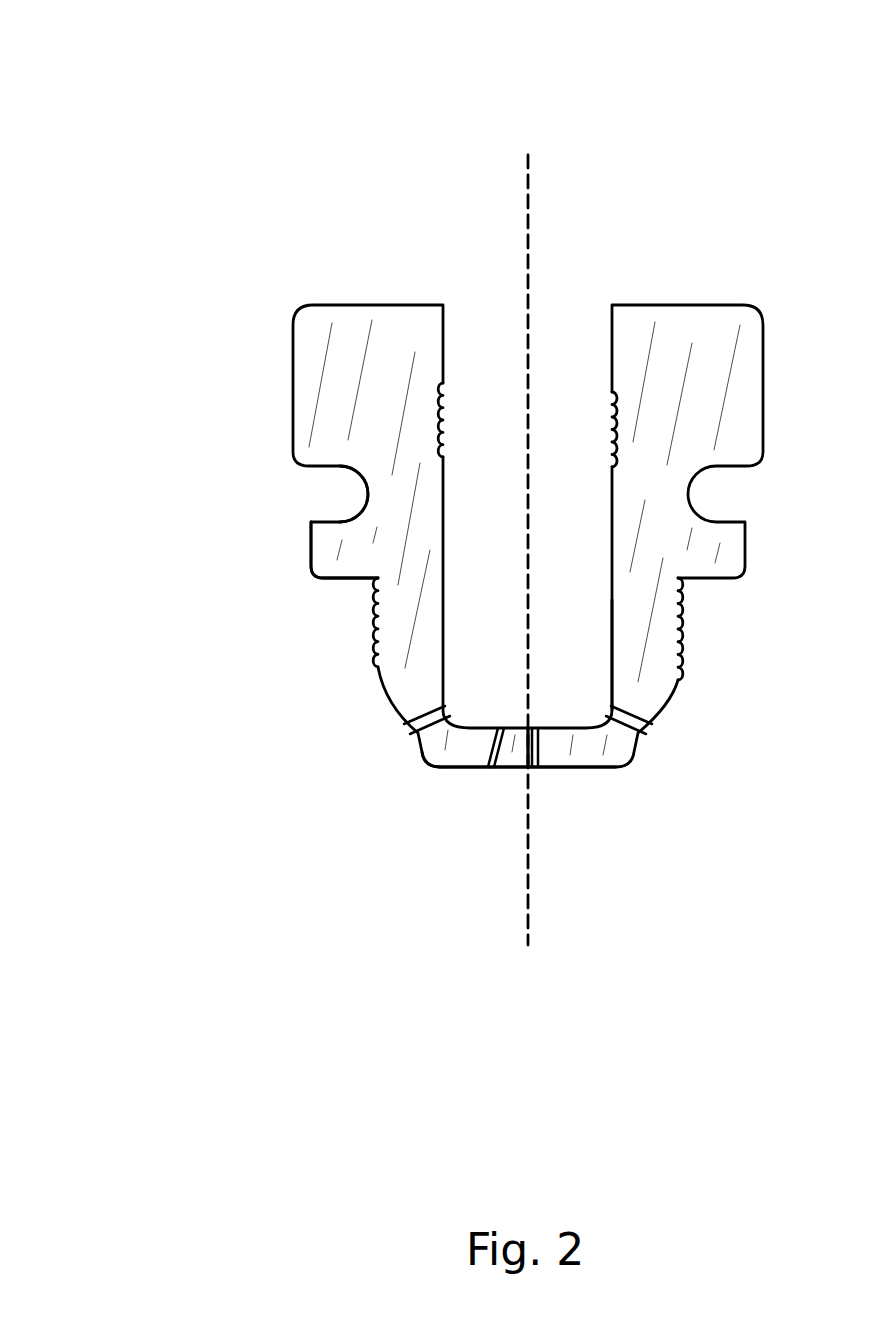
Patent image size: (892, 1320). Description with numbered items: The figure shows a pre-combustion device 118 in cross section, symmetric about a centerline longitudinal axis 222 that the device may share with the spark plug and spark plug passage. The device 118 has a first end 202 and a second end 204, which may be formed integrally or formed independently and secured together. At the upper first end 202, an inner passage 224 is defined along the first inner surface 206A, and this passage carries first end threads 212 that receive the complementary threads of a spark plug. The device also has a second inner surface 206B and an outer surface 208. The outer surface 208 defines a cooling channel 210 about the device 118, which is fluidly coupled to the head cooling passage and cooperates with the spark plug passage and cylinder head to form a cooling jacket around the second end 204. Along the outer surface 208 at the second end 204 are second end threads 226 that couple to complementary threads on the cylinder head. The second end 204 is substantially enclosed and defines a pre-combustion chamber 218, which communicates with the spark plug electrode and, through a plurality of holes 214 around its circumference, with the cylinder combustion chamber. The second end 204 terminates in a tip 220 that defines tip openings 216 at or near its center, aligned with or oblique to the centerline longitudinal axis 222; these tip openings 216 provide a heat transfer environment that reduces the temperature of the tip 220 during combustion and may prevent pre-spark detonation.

The pre-combustion device 118 is at (162, 55).
The first end 202 is at (452, 160).
The second end 204 is at (418, 890).
The first inner surface 206A is at (455, 472).
The second inner surface 206B is at (603, 660).
The outer surface 208 is at (290, 556).
The cooling channel 210 is at (306, 493).
The first end threads 212 is at (613, 424).
The holes 214 is at (405, 729).
The tip opening 216 is at (493, 770).
The pre-combustion chamber 218 is at (480, 705).
The tip 220 is at (425, 767).
The centerline longitudinal axis 222 is at (536, 904).
The inner passage 224 is at (580, 302).
The second end threads 226 is at (688, 655).